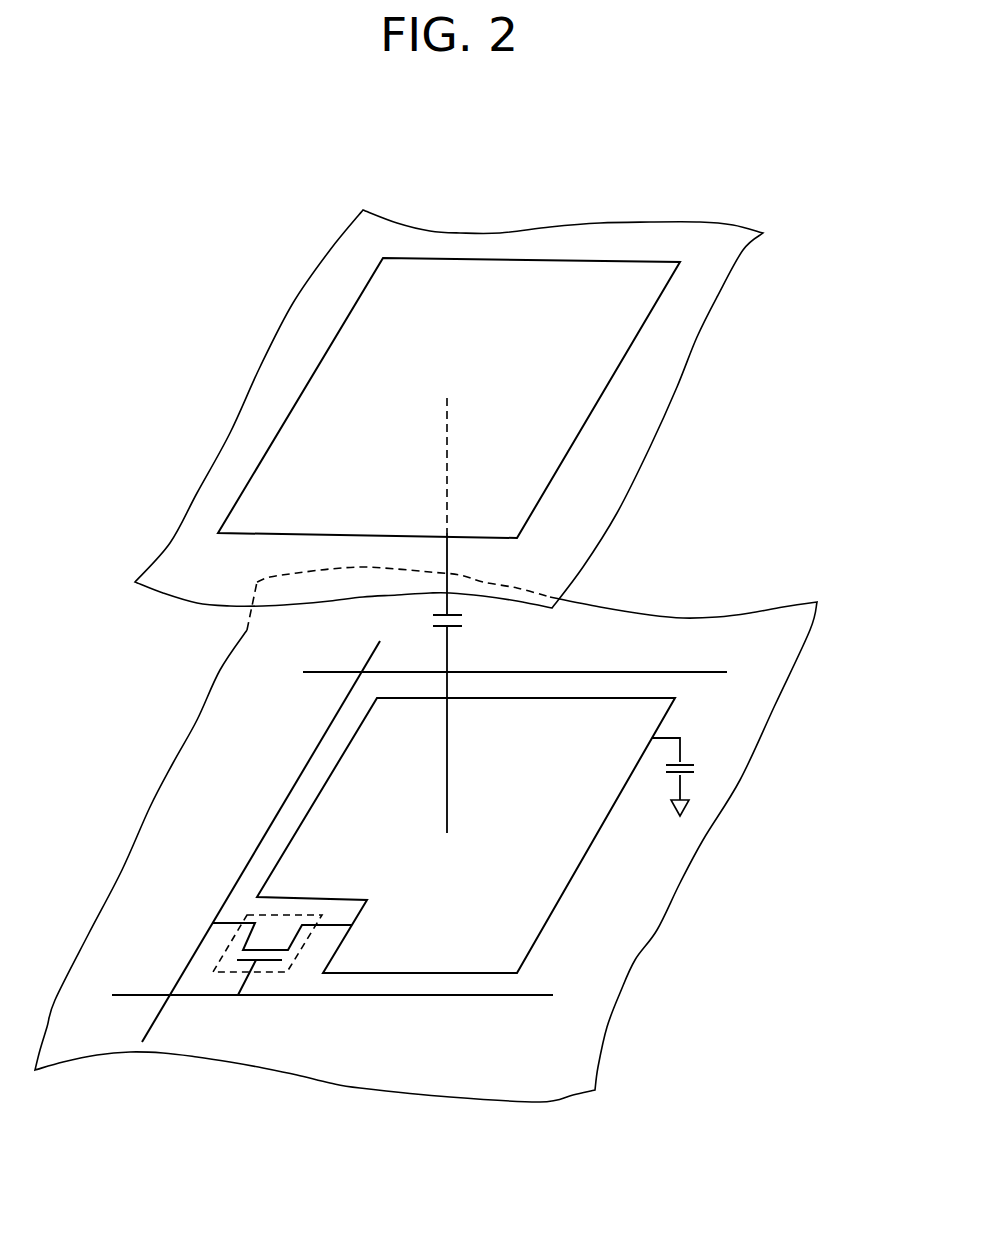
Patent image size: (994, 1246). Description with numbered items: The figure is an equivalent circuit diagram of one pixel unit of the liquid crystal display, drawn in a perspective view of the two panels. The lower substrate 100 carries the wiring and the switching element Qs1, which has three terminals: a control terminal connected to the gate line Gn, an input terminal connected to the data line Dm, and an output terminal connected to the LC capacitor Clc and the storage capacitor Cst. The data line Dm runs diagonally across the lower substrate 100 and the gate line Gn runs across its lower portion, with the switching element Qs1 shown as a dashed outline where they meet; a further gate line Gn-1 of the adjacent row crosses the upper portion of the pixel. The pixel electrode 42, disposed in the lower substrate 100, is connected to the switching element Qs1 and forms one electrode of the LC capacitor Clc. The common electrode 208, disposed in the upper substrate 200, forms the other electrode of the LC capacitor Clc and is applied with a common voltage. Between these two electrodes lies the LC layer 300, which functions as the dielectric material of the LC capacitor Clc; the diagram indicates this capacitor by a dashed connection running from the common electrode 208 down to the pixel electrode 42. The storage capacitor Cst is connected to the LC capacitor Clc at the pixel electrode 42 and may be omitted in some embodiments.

The upper substrate 200 is at (683, 412).
The common electrode 208 is at (660, 262).
The lower substrate 100 is at (700, 872).
The LC layer 300 is at (178, 747).
The pixel electrode 42 is at (560, 895).
The switching element Qs1 is at (248, 915).
The LC capacitor Clc is at (470, 615).
The storage capacitor Cst is at (693, 777).
The gate line Gn is at (329, 1012).
The gate line Gn-1 is at (496, 689).
The data line Dm is at (278, 836).